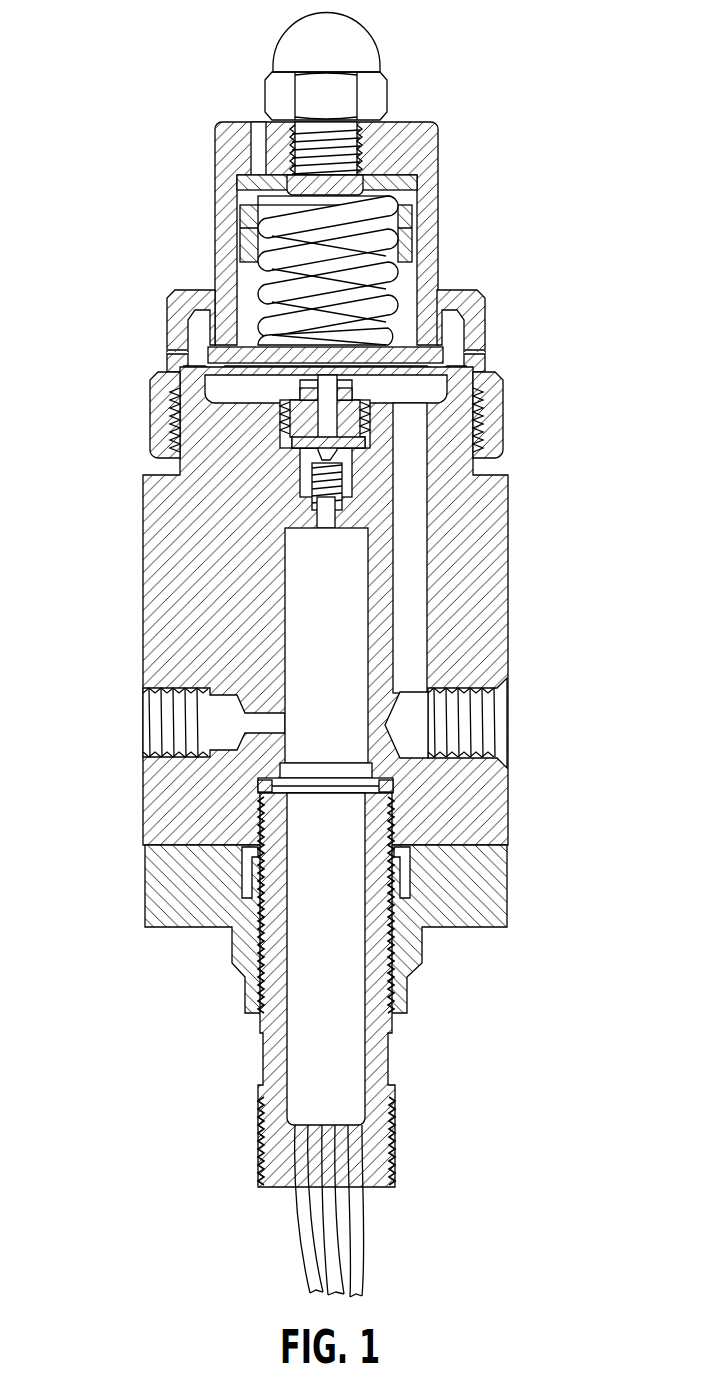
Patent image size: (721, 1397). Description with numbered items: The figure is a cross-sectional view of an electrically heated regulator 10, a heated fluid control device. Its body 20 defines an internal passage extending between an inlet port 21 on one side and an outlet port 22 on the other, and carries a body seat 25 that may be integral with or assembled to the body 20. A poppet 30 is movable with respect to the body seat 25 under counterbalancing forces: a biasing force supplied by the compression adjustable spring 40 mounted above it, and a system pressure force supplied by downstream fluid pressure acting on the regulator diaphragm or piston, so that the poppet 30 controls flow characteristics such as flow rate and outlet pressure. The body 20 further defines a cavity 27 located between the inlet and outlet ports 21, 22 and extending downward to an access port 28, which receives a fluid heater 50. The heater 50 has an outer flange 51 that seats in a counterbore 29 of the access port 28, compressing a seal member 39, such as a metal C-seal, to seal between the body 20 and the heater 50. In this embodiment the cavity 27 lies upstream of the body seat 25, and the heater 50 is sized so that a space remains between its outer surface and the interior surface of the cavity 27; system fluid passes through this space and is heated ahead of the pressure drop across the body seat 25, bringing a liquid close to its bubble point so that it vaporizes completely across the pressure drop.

The heated regulator 10 is at (119, 104).
The body 20 is at (473, 527).
The inlet port 21 is at (141, 725).
The outlet port 22 is at (510, 725).
The body seat 25 is at (293, 445).
The cavity 27 is at (384, 819).
The access port 28 is at (260, 822).
The counterbore 29 is at (385, 784).
The poppet 30 is at (323, 452).
The seal member 39 is at (268, 780).
The compression adjustable spring 40 is at (380, 252).
The fluid heater 50 is at (355, 588).
The outer flange 51 is at (383, 780).